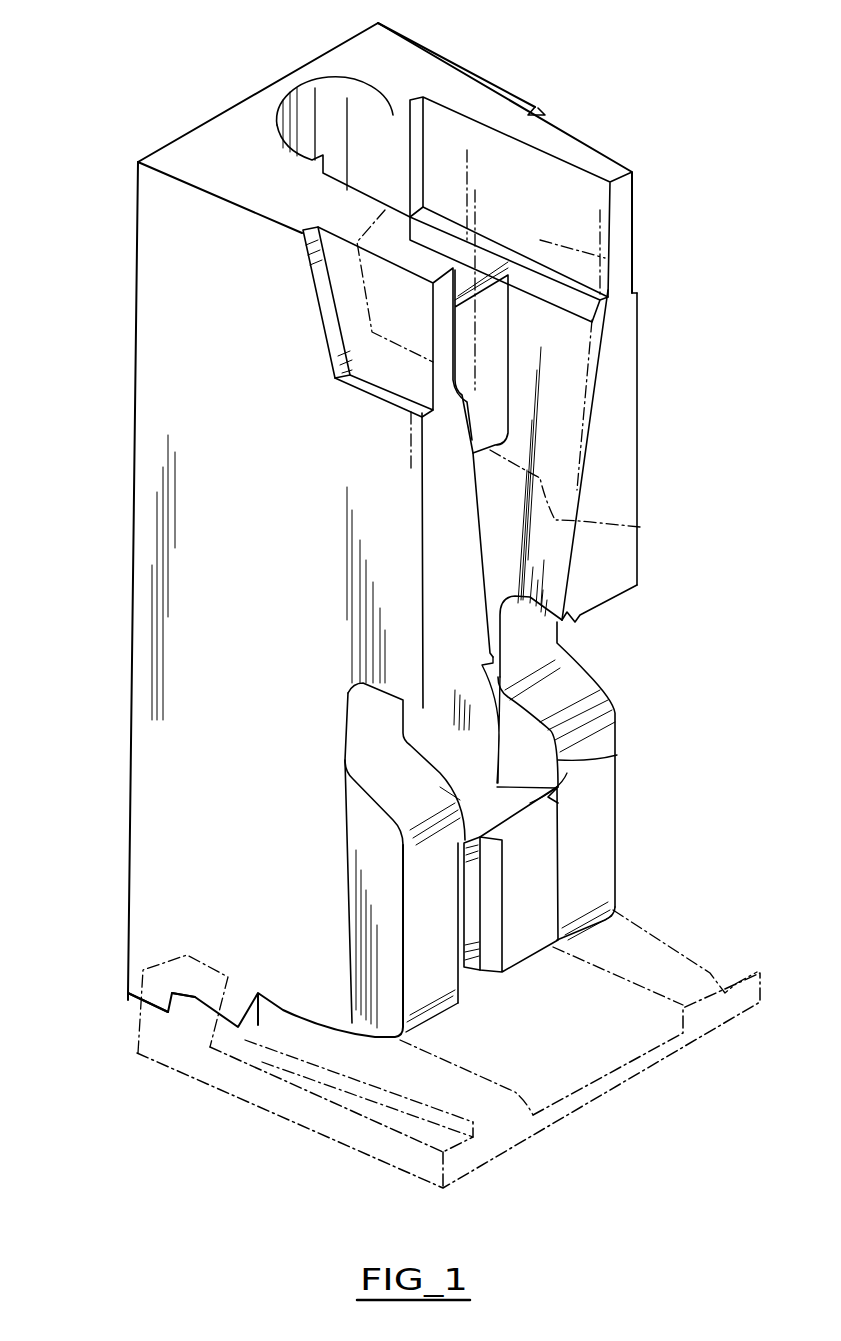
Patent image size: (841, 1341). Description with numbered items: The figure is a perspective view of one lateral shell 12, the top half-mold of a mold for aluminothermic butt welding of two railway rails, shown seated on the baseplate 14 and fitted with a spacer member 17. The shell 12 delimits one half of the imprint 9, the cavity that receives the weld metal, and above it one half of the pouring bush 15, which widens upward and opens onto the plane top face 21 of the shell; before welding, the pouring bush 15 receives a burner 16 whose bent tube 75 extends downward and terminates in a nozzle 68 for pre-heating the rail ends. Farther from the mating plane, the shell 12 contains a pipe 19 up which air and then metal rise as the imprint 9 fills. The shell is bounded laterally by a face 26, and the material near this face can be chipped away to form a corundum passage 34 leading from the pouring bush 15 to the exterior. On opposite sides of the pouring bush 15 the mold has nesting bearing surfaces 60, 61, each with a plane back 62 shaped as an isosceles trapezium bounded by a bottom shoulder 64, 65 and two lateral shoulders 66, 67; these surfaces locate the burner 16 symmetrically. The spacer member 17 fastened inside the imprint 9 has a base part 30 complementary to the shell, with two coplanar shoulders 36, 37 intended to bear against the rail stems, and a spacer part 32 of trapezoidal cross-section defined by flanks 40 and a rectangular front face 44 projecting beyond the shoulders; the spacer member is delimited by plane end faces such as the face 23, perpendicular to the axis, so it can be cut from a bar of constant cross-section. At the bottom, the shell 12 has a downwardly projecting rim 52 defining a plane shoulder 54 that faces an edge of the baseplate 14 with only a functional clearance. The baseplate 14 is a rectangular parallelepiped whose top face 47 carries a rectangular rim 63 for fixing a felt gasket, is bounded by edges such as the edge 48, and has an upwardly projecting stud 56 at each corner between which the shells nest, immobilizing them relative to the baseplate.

The imprint 9 is at (537, 750).
The lateral shell 12 is at (110, 655).
The baseplate 14 is at (500, 1167).
The pouring bush 15 is at (580, 187).
The burner 16 is at (550, 435).
The spacer member 17 is at (540, 963).
The pipe 19 is at (330, 98).
The top face 21 is at (428, 72).
The face 23 is at (505, 820).
The face 26 is at (147, 845).
The base part 30 is at (498, 800).
The spacer part 32 is at (590, 757).
The corundum passage 34 is at (413, 338).
The shoulder 36 is at (462, 980).
The shoulder 37 is at (567, 773).
The flank 40 is at (485, 975).
The front face 44 is at (540, 893).
The top face 47 is at (600, 1067).
The edge 48 is at (315, 1115).
The rim 52 is at (128, 1005).
The shoulder 54 is at (185, 1010).
The stud 56 is at (180, 960).
The nesting bearing surface 60 is at (357, 340).
The nesting bearing surface 61 is at (633, 223).
The back 62 is at (373, 368).
The rim 63 is at (680, 968).
The bottom shoulder 64 is at (399, 455).
The bottom shoulder 65 is at (637, 283).
The lateral shoulder 66 is at (330, 292).
The lateral shoulder 67 is at (537, 112).
The nozzle 68 is at (591, 495).
The tube 75 is at (627, 323).